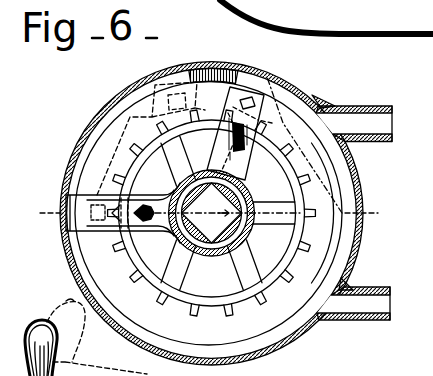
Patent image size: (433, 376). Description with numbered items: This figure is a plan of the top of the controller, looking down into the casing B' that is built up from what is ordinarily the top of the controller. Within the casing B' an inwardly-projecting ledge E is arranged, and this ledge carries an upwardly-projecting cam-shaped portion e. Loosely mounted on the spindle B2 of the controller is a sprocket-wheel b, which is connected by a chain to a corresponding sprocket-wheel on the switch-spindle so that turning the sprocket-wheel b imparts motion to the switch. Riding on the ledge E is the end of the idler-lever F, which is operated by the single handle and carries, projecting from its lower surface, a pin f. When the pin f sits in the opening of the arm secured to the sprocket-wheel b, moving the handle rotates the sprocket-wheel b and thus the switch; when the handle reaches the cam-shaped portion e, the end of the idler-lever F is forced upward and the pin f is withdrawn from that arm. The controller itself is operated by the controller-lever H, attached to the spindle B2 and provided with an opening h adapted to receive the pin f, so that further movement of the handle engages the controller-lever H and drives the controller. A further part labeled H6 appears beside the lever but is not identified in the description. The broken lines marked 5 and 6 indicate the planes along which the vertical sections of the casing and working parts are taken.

The casing B' is at (223, 213).
The inwardly-projecting ledge E is at (333, 274).
The cam-shaped portion e is at (236, 73).
The section line 6 is at (151, 138).
The sprocket-wheel b is at (216, 306).
The controller-lever H is at (238, 168).
The spindle of the controller B2 is at (212, 221).
The arm H6 is at (257, 118).
The opening h is at (242, 102).
The idler-lever F is at (66, 219).
The pin f is at (99, 232).
The section line 5 is at (208, 150).